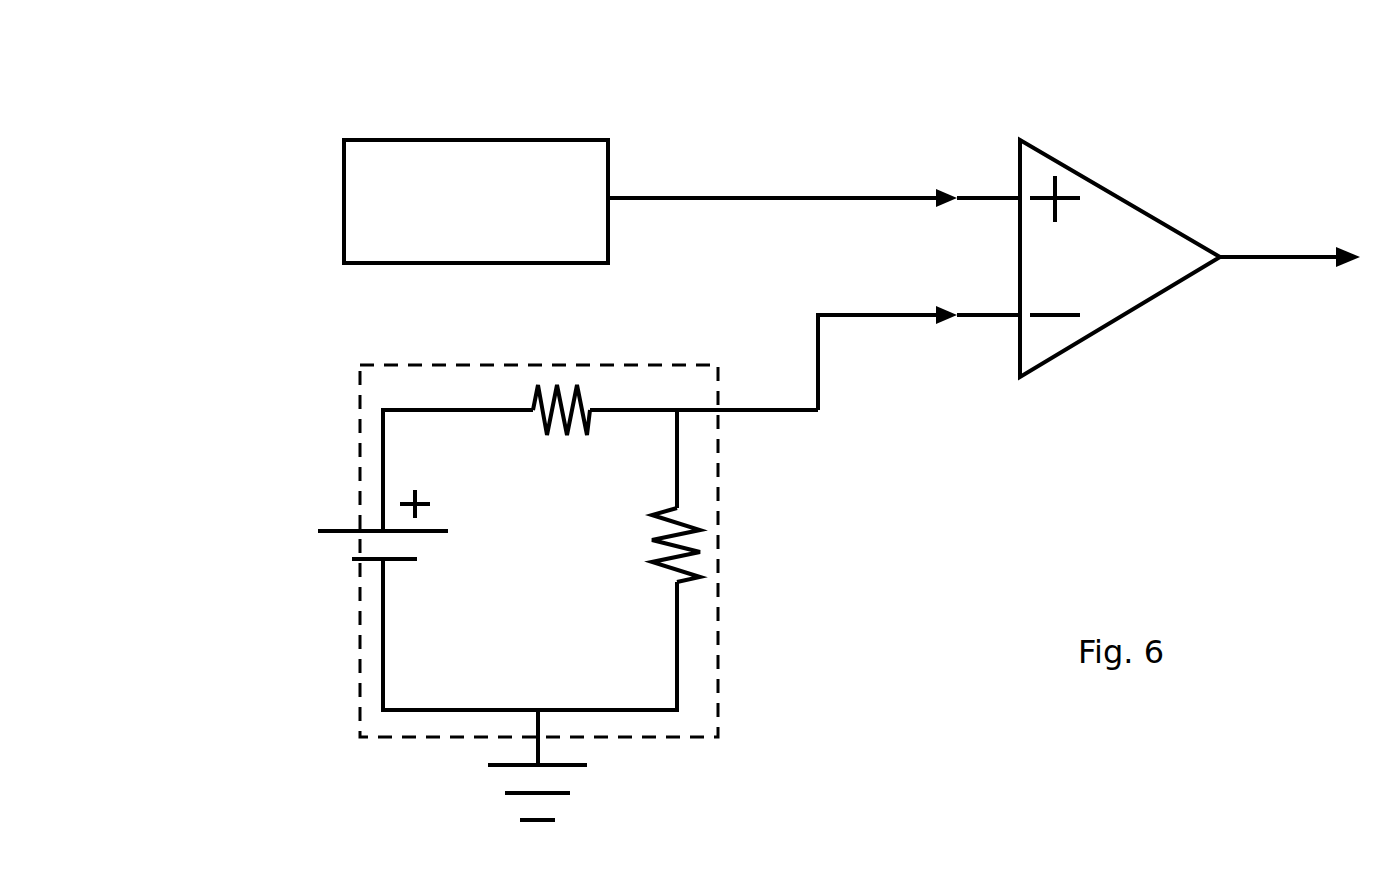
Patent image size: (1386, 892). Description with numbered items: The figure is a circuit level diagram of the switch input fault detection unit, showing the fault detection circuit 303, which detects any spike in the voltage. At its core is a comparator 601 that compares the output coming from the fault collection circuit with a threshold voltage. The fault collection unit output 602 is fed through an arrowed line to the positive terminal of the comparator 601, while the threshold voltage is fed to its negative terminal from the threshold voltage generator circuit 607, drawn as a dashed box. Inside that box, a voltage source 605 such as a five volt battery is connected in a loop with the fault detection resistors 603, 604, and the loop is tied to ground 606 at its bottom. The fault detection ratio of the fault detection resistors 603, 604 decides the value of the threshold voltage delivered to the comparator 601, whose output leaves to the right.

The fault detection circuit 303 is at (292, 194).
The comparator 601 is at (1118, 187).
The fault collection unit output 602 is at (487, 137).
The fault detection resistor 603 is at (587, 383).
The fault detection resistor 604 is at (707, 573).
The voltage source 605 is at (347, 517).
The ground 606 is at (572, 790).
The threshold voltage generator circuit 607 is at (718, 718).